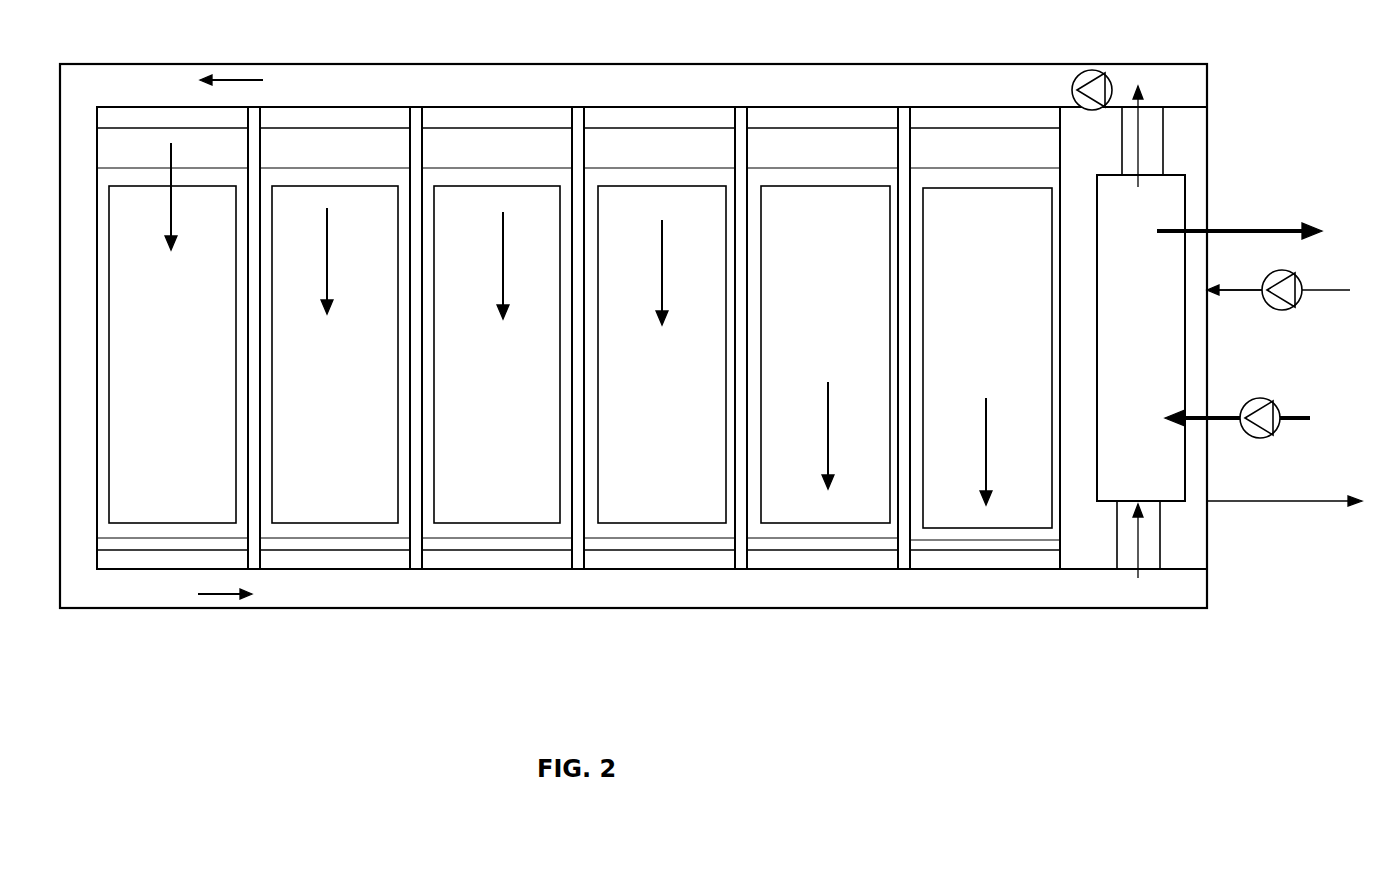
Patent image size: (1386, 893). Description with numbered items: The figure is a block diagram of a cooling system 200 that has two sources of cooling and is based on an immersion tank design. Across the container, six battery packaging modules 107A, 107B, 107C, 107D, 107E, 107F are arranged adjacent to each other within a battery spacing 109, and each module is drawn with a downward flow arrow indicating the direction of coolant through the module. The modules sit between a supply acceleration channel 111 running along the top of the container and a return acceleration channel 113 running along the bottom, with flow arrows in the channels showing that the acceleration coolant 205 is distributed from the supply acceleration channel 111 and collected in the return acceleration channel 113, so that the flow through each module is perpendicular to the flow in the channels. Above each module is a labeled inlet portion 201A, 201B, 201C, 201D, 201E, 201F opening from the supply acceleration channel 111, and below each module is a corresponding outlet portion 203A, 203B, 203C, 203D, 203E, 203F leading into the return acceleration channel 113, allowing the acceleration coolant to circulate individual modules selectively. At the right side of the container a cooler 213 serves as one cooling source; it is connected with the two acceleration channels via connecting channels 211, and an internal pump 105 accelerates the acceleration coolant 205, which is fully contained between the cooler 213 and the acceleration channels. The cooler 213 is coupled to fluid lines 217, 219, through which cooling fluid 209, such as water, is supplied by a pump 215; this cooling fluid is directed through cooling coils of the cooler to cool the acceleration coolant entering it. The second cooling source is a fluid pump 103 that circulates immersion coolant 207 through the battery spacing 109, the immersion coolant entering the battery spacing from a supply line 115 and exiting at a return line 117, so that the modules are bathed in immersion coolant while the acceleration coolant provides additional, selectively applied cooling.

The cooling system 200 is at (648, 317).
The internal pump 105 is at (1085, 73).
The acceleration coolant 205 is at (1201, 87).
The connecting channels 211 is at (1133, 143).
The fluid line 217 is at (1246, 225).
The immersion coolant 207 is at (1295, 277).
The fluid pump 103 is at (1275, 312).
The supply line 115 is at (1251, 291).
The cooler 213 is at (1166, 359).
The pump 215 is at (1262, 398).
The cooling fluid 209 is at (1268, 420).
The fluid line 219 is at (1296, 424).
The return line 117 is at (1278, 500).
The battery spacing 109 is at (1114, 552).
The supply acceleration channel 111 is at (427, 104).
The return acceleration channel 113 is at (430, 605).
The upper chamber 201A is at (197, 115).
The upper chamber 201B is at (365, 115).
The upper chamber 201C is at (557, 115).
The upper chamber 201D is at (715, 115).
The upper chamber 201E is at (868, 115).
The upper chamber 201F is at (1030, 115).
The battery packaging module 107A is at (215, 369).
The battery packaging module 107B is at (371, 369).
The battery packaging module 107C is at (532, 369).
The battery packaging module 107D is at (697, 369).
The battery packaging module 107E is at (857, 369).
The battery packaging module 107F is at (1015, 369).
The lower chamber 203A is at (192, 570).
The lower chamber 203B is at (360, 568).
The lower chamber 203C is at (565, 568).
The lower chamber 203D is at (712, 568).
The lower chamber 203E is at (871, 568).
The lower chamber 203F is at (1006, 568).